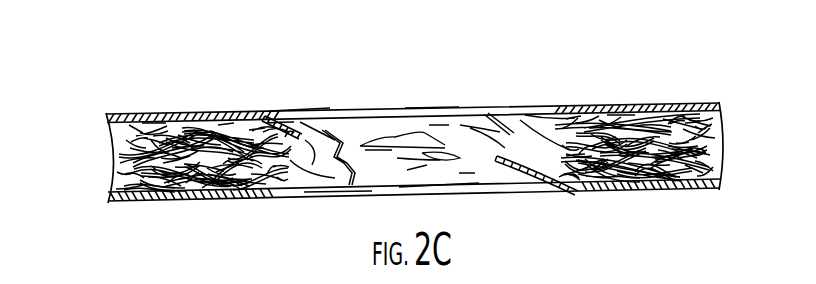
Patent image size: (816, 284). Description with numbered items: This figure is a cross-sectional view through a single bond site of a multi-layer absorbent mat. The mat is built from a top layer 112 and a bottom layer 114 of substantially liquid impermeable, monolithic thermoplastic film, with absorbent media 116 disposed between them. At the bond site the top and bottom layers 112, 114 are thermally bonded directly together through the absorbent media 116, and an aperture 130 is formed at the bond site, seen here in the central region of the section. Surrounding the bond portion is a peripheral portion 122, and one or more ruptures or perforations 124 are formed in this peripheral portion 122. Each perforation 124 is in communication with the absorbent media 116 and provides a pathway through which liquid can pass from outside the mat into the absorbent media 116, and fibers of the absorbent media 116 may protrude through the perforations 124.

The top layer 112 is at (180, 115).
The bottom layer 114 is at (183, 199).
The absorbent media 116 is at (100, 167).
The peripheral portion 122 is at (287, 120).
The perforations 124 is at (337, 122).
The aperture 130 is at (390, 122).